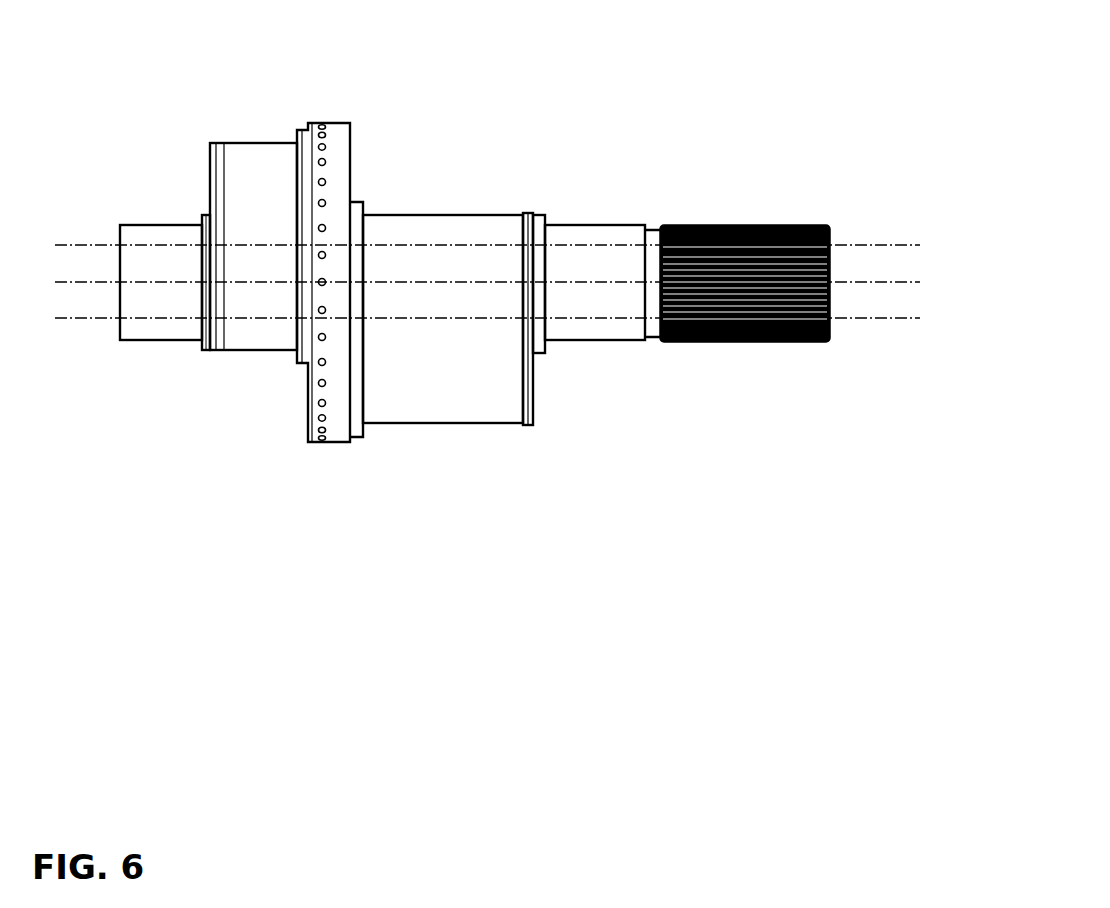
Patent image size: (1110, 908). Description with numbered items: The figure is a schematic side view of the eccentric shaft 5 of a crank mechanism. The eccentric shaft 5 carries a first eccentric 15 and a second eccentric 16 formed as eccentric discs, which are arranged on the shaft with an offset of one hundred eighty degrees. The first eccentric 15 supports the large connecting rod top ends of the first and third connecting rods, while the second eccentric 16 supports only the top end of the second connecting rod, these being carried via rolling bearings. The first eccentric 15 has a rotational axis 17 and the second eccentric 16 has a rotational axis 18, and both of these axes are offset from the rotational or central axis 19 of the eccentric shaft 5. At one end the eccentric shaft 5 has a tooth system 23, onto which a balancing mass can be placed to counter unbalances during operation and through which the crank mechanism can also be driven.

The eccentric shaft 5 is at (126, 76).
The first eccentric 15 is at (443, 397).
The second eccentric 16 is at (245, 163).
The rotational axis 17 is at (80, 320).
The rotational axis 18 is at (107, 245).
The central axis 19 is at (62, 281).
The tooth system 23 is at (741, 225).